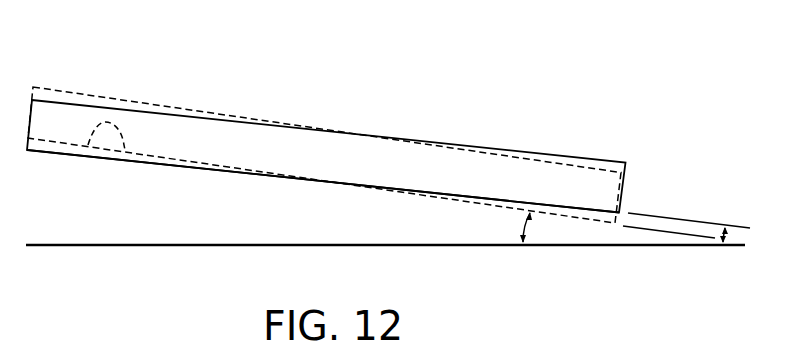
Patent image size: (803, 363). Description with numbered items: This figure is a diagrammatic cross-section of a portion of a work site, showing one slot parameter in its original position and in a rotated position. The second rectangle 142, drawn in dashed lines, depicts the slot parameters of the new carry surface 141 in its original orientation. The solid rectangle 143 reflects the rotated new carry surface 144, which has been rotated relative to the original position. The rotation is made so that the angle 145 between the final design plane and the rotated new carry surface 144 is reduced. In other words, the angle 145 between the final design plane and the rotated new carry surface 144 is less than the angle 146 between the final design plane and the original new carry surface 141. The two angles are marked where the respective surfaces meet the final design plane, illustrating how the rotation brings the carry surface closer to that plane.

The new carry surface 141 is at (125, 152).
The second rectangle 142 is at (75, 88).
The solid rectangle 143 is at (577, 158).
The rotated new carry surface 144 is at (478, 203).
The angle 145 is at (727, 236).
The angle 146 is at (532, 223).